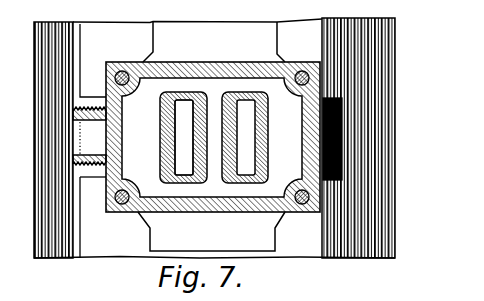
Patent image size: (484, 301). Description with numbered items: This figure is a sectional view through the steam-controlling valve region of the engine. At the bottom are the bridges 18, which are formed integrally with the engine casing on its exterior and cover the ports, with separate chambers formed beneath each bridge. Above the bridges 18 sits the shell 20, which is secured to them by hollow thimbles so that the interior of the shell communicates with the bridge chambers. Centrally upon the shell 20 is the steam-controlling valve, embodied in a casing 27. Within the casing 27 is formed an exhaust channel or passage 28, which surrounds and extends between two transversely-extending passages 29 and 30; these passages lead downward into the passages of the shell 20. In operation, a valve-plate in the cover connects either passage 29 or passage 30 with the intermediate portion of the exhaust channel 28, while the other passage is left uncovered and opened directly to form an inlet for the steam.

The bridge 18 is at (97, 168).
The shell 20 is at (211, 231).
The casing 27 is at (300, 213).
The exhaust channel 28 is at (215, 122).
The transversely-extending passage 29 is at (176, 150).
The transversely-extending passage 30 is at (244, 141).